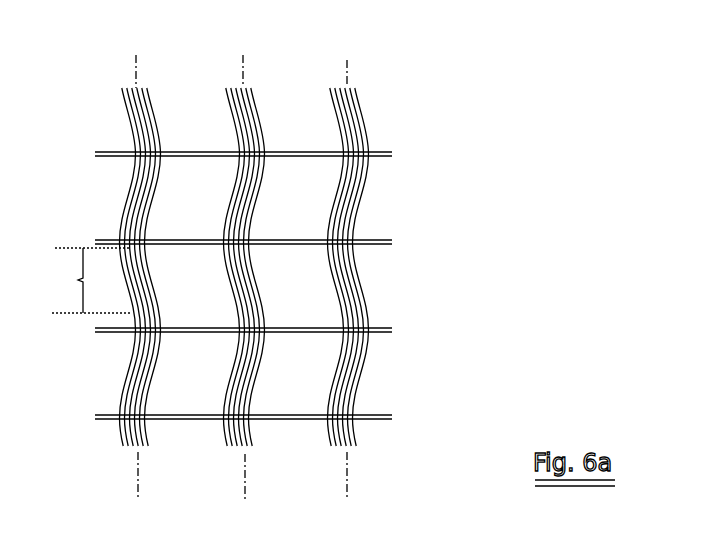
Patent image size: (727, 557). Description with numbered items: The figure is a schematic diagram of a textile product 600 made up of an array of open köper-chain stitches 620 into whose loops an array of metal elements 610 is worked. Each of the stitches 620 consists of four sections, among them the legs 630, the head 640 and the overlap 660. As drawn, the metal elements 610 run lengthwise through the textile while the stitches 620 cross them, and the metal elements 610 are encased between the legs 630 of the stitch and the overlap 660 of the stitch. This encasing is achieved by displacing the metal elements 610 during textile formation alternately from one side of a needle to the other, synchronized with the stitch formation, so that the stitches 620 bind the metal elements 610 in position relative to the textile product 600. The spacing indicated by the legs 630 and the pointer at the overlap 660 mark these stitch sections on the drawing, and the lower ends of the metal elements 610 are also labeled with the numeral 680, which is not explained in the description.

The textile product 600 is at (313, 287).
The metal elements 610 is at (340, 130).
The stitches 620 is at (382, 240).
The legs 630 is at (80, 280).
The head 640 is at (115, 223).
The overlap 660 is at (200, 340).
The ends of warp fiber bundles 680 is at (347, 462).